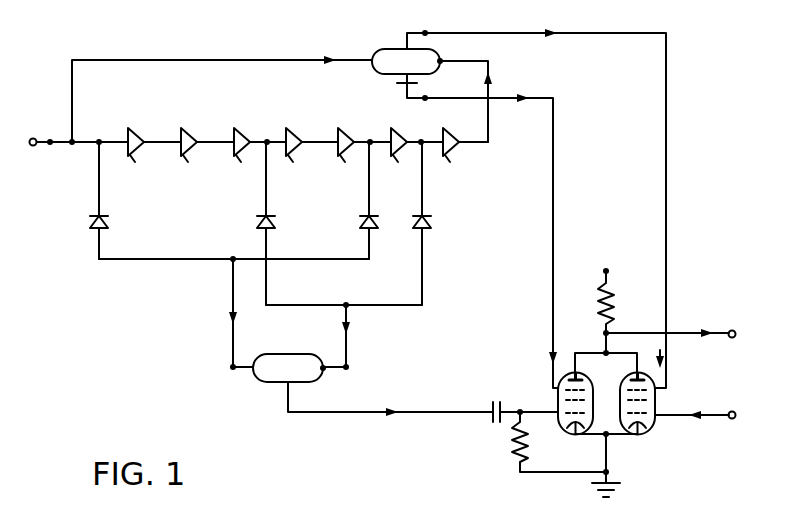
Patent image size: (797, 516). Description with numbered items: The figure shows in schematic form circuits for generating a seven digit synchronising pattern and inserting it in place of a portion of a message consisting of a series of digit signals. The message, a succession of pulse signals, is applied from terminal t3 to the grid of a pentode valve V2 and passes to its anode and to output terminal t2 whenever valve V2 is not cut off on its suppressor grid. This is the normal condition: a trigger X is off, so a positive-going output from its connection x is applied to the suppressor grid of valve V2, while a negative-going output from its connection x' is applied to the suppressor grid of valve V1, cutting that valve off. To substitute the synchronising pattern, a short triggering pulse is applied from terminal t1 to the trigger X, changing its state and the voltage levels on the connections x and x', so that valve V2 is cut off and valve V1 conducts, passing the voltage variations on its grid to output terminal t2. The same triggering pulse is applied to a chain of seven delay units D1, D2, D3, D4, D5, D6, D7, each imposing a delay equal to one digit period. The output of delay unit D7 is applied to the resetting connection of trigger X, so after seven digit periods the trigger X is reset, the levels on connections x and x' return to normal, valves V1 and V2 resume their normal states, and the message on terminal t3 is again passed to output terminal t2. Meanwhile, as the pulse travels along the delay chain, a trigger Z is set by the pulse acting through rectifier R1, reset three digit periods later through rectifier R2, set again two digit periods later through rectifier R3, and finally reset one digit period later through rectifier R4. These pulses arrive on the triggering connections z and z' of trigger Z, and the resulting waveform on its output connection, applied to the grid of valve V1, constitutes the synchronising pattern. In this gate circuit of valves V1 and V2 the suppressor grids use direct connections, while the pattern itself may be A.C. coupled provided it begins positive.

The delay unit D1 is at (140, 164).
The delay unit D2 is at (192, 164).
The delay unit D3 is at (241, 164).
The delay unit D4 is at (299, 164).
The delay unit D5 is at (346, 164).
The delay unit D6 is at (397, 164).
The delay unit D7 is at (454, 164).
The rectifier R1 is at (107, 225).
The rectifier R2 is at (274, 225).
The rectifier R3 is at (377, 225).
The rectifier R4 is at (430, 225).
The trigger X is at (393, 48).
The output connection of trigger X x is at (425, 18).
The output connection of trigger X x' is at (422, 110).
The trigger Z is at (281, 383).
The triggering connection of trigger Z z is at (222, 369).
The triggering connection of trigger Z z' is at (356, 369).
The valve V1 is at (557, 401).
The pentode valve V2 is at (657, 398).
The terminal t1 is at (41, 123).
The output terminal t2 is at (679, 319).
The terminal t3 is at (700, 434).